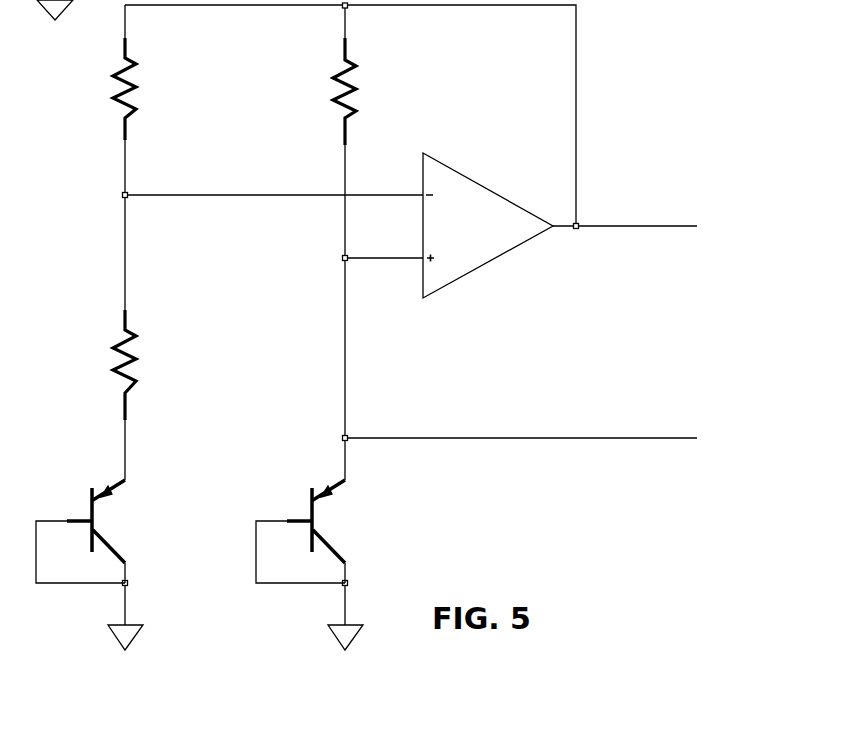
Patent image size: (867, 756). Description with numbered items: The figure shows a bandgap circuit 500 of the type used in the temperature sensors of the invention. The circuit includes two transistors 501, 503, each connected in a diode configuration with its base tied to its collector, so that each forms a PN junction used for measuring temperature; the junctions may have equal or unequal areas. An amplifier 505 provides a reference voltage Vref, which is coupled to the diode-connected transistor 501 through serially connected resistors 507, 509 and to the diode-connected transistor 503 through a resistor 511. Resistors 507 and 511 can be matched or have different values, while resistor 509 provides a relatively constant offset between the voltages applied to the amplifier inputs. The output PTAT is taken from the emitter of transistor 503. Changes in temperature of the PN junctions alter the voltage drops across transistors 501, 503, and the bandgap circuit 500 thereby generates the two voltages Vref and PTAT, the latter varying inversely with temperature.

The bandgap circuit 500 is at (245, 433).
The transistor 501 is at (92, 492).
The transistor 503 is at (317, 500).
The amplifier 505 is at (483, 235).
The resistor 507 is at (118, 113).
The resistor 509 is at (117, 352).
The resistor 511 is at (353, 82).